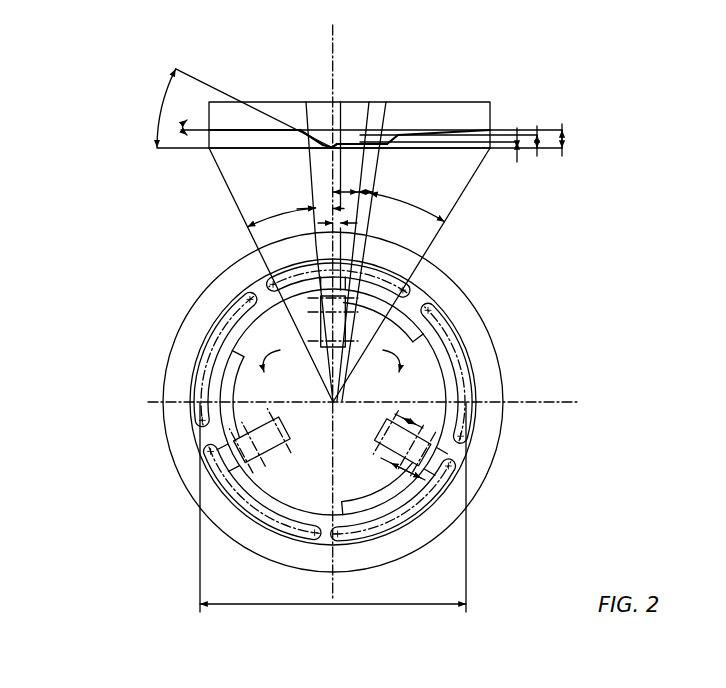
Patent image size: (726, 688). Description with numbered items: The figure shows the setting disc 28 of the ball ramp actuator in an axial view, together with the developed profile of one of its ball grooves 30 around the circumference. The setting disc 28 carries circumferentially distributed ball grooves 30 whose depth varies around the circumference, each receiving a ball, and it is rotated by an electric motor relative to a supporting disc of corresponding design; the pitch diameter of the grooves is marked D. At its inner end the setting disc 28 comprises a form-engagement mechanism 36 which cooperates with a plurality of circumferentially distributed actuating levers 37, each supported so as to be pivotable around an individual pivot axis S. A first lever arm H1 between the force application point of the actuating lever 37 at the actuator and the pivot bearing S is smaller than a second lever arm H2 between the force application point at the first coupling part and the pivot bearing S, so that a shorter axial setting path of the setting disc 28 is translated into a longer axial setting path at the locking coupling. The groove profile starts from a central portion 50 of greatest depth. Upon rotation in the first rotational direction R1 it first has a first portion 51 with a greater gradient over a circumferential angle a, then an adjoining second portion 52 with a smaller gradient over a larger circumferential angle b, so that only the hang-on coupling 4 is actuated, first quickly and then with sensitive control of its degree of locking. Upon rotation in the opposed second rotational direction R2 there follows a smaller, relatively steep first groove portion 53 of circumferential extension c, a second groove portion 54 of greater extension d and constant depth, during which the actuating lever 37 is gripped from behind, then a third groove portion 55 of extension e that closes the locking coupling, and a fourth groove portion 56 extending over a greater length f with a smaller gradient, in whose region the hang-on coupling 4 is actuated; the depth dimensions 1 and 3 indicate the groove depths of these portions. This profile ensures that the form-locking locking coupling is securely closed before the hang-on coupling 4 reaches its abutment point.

The setting disc 28 is at (150, 292).
The ball grooves 30 is at (470, 352).
The form-engagement mechanism 36 is at (407, 322).
The actuating levers 37 is at (425, 457).
The central portion 50 is at (332, 146).
The first portion 51 is at (323, 145).
The second portion 52 is at (250, 130).
The first groove portion 53 is at (338, 144).
The second groove portion 54 is at (363, 144).
The third groove portion 55 is at (387, 144).
The fourth groove portion 56 is at (423, 129).
The pivot axes S is at (420, 432).
The first lever arm H1 is at (395, 474).
The second lever arm H2 is at (412, 410).
The first rotational direction R1 is at (383, 368).
The second rotational direction R2 is at (280, 366).
The pitch diameter D is at (333, 507).
The circumferential angle a is at (320, 197).
The circumferential angle b is at (282, 209).
The circumferential extension c is at (337, 217).
The circumferential extension d is at (345, 183).
The circumferential extension e is at (367, 183).
The circumferential length f is at (407, 205).
The depth 1 is at (505, 145).
The depth 3 is at (528, 141).
The hang-on coupling 4 is at (555, 140).